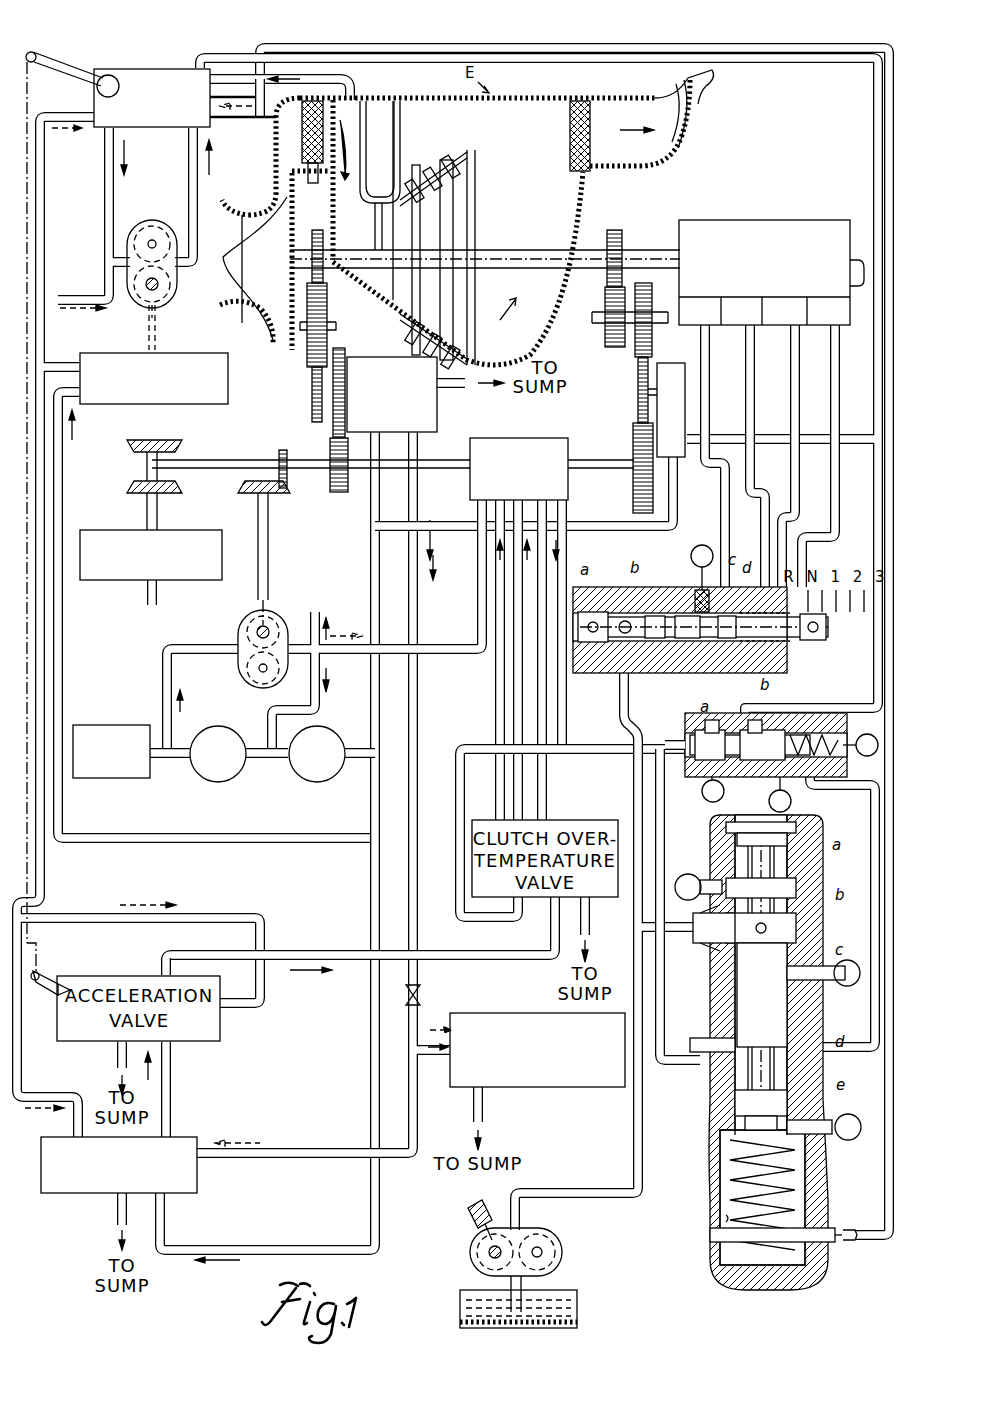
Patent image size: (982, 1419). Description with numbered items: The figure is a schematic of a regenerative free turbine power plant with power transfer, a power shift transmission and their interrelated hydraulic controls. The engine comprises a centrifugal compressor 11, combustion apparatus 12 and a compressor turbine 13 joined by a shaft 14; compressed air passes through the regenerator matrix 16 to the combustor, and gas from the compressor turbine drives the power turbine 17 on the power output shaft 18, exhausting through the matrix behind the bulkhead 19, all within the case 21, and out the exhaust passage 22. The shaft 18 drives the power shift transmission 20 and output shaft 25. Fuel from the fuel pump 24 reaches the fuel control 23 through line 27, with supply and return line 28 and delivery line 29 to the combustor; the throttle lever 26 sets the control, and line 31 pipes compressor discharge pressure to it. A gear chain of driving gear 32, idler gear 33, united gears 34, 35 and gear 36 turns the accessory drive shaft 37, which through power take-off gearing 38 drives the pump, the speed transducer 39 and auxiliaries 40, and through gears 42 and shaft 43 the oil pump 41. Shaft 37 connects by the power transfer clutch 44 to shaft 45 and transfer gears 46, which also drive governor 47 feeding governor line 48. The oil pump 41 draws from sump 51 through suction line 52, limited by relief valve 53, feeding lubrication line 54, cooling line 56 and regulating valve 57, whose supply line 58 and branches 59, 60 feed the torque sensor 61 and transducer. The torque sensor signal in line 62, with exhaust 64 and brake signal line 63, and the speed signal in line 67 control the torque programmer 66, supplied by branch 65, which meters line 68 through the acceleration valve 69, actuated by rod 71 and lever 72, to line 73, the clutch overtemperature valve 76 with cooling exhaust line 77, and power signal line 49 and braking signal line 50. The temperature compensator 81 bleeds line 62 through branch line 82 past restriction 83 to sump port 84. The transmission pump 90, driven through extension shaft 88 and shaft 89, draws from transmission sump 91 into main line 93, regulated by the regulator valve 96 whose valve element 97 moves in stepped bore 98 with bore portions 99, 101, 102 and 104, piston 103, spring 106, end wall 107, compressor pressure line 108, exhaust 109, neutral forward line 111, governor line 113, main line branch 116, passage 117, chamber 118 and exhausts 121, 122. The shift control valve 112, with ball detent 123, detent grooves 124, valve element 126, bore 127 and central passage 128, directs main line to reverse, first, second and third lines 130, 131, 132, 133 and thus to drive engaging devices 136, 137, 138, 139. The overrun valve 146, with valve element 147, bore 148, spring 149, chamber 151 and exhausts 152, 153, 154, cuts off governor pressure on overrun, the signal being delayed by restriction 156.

The centrifugal compressor 11 is at (244, 210).
The combustion apparatus 12 is at (380, 108).
The compressor turbine 13 is at (422, 172).
The shaft 14 is at (352, 246).
The matrix 16 is at (328, 104).
The power turbine 17 is at (458, 152).
The power output shaft 18 is at (500, 244).
The bulkhead 19 is at (396, 134).
The power shift transmission 20 is at (802, 226).
The case 21 is at (552, 340).
The exhaust passage 22 is at (665, 150).
The fuel control 23 is at (120, 67).
The fuel pump 24 is at (165, 230).
The output shaft 25 is at (860, 258).
The throttle lever 26 is at (52, 62).
The fuel line 27 is at (190, 148).
The fuel supply line 28 is at (104, 195).
The fuel delivery line 29 is at (236, 74).
The compressor discharge pressure line 31 is at (250, 116).
The driving gear 32 is at (310, 250).
The idler gear 33 is at (330, 320).
The gear 34 is at (310, 396).
The gear 35 is at (348, 350).
The gear 36 is at (332, 456).
The power transfer and accessory drive shaft 37 is at (290, 480).
The power take-off gearing 38 is at (178, 450).
The gas generator speed transducer 39 is at (194, 358).
The auxiliaries 40 is at (196, 532).
The oil pump 41 is at (250, 626).
The gears 42 is at (274, 496).
The oil pump shaft 43 is at (270, 550).
The power transfer clutch 44 is at (556, 438).
The transfer shaft 45 is at (606, 460).
The transfer gears 46 is at (636, 424).
The governor 47 is at (668, 364).
The governor line 48 is at (195, 57).
The power signal line 49 is at (540, 728).
The braking signal line 50 is at (502, 708).
The sump 51 is at (124, 778).
The suction line 52 is at (190, 648).
The relief valve 53 is at (214, 782).
The lubrication line 54 is at (310, 628).
The cooling line 56 is at (470, 576).
The pressure regulating valve 57 is at (302, 784).
The supply line 58 is at (358, 748).
The branch passage 59 is at (372, 580).
The branch line 60 is at (64, 490).
The torque sensor 61 is at (380, 366).
The torque signal line 62 is at (410, 578).
The brake signal line 63 is at (460, 428).
The exhaust 64 is at (462, 378).
The supply line branch 65 is at (165, 1226).
The torque programmer 66 is at (200, 1184).
The speed signal line 67 is at (40, 180).
The torque programmer line 68 is at (172, 1090).
The acceleration valve 69 is at (160, 972).
The rod 71 is at (45, 945).
The lever 72 is at (58, 978).
The clutch energizing line 73 is at (325, 950).
The clutch overtemperature valve 76 is at (572, 820).
The exhaust line 77 is at (564, 722).
The temperature compensator 81 is at (524, 1013).
The branch line 82 is at (438, 1058).
The restriction 83 is at (422, 995).
The sump port 84 is at (608, 520).
The extension shaft 88 is at (146, 600).
The pump shaft 89 is at (470, 1214).
The transmission pump 90 is at (556, 1238).
The transmission sump 91 is at (580, 1300).
The main line 93 is at (630, 716).
The main line regulator valve 96 is at (714, 830).
The valve element 97 is at (740, 972).
The stepped bore 98 is at (740, 1000).
The small diameter bore portion 99 is at (736, 860).
The bore portion 101 is at (708, 1030).
The large diameter bore portion 102 is at (740, 1104).
The piston 103 is at (726, 1160).
The largest bore portion 104 is at (724, 1218).
The spring 106 is at (724, 1244).
The end wall 107 is at (760, 1290).
The line 108 is at (440, 44).
The exhaust 109 is at (838, 1120).
The neutral forward signal line 111 is at (698, 1066).
The shift control valve 112 is at (786, 588).
The governor line 113 is at (872, 1020).
The main line branch 116 is at (706, 944).
The passage 117 is at (796, 880).
The closed end chamber 118 is at (796, 830).
The exhaust 121 is at (688, 874).
The exhaust 122 is at (848, 958).
The ball detent 123 is at (694, 590).
The detent grooves 124 is at (668, 614).
The valve element 126 is at (616, 614).
The bore 127 is at (800, 642).
The central passage 128 is at (620, 674).
The reverse line 130 is at (720, 508).
The first line 131 is at (750, 444).
The second line 132 is at (796, 448).
The third line 133 is at (824, 532).
The reverse drive engaging device 136 is at (708, 306).
The first drive engaging device 137 is at (752, 306).
The second drive engaging device 138 is at (796, 306).
The third drive engaging device 139 is at (840, 306).
The overrun valve 146 is at (708, 714).
The valve element 147 is at (735, 714).
The bore 148 is at (726, 778).
The spring 149 is at (822, 714).
The closed chamber 151 is at (700, 722).
The exhaust 152 is at (792, 788).
The exhaust 153 is at (860, 758).
The exhaust 154 is at (726, 790).
The time delay restriction 156 is at (672, 758).